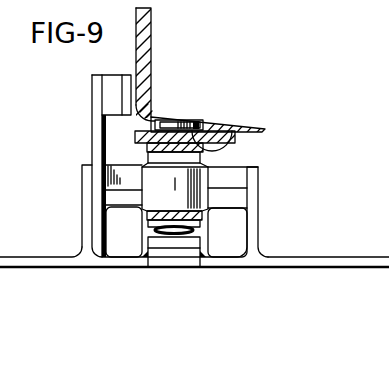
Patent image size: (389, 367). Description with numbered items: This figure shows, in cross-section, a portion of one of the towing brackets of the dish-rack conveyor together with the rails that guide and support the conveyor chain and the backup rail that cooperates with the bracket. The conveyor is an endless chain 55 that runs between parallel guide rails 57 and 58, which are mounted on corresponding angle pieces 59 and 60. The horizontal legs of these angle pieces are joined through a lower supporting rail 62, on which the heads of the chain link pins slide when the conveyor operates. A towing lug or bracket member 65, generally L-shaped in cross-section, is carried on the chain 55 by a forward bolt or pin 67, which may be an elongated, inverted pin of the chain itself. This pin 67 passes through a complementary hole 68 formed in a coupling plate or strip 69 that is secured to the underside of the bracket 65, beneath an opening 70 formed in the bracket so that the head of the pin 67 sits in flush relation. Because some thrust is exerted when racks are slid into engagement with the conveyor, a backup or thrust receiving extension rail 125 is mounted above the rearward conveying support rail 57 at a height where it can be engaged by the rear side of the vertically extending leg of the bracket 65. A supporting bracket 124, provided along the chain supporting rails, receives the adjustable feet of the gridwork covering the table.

The towing lug or bracket member 65 is at (150, 34).
The opening 70 is at (151, 115).
The forward bolt or pin 67 is at (190, 128).
The hole 68 is at (212, 122).
The coupling plate or strip 69 is at (237, 140).
The backup or thrust receiving extension rail 125 is at (110, 94).
The endless chain 55 is at (143, 150).
The guide rail 57 is at (107, 196).
The guide rail 58 is at (242, 196).
The angle piece 59 is at (98, 229).
The angle piece 60 is at (258, 221).
The lower supporting rail 62 is at (173, 258).
The supporting bracket 124 is at (278, 268).